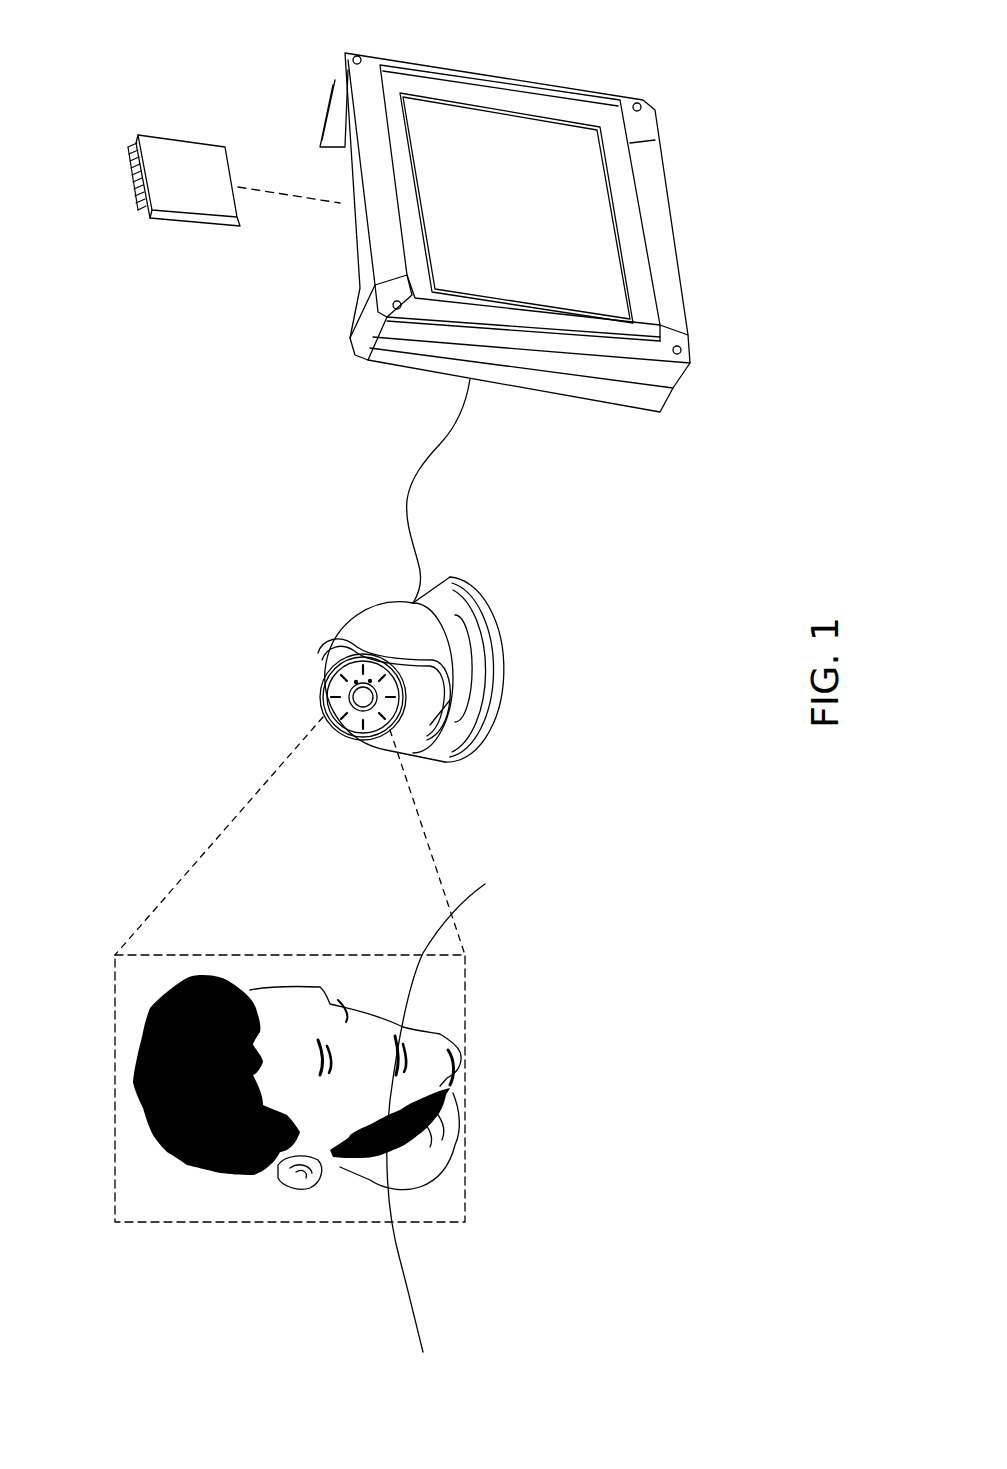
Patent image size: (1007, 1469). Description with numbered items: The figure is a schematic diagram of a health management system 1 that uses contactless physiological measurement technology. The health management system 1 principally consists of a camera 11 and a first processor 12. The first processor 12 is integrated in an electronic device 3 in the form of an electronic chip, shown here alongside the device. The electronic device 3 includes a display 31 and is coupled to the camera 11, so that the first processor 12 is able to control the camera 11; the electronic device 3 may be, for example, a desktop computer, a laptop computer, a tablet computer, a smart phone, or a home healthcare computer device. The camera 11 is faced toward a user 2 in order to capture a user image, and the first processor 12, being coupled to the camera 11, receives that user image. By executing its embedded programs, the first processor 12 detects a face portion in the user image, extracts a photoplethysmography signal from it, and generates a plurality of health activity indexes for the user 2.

The health management system 1 is at (600, 585).
The user 2 is at (112, 959).
The electronic device 3 is at (338, 79).
The camera 11 is at (318, 657).
The first processor 12 is at (128, 153).
The display 31 is at (602, 233).